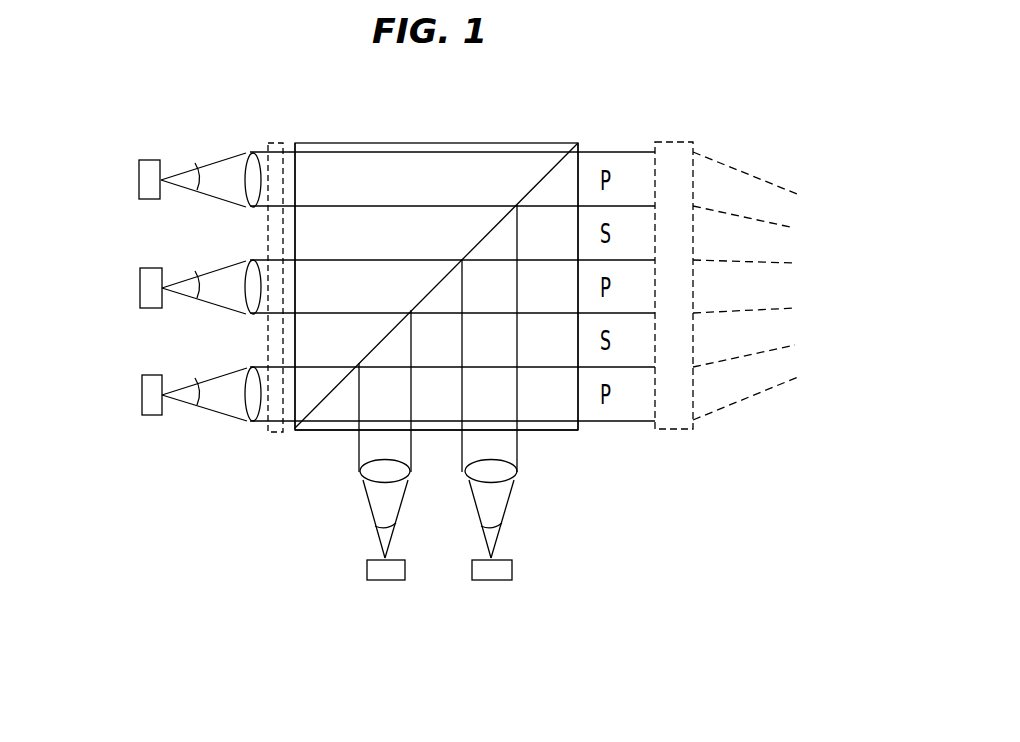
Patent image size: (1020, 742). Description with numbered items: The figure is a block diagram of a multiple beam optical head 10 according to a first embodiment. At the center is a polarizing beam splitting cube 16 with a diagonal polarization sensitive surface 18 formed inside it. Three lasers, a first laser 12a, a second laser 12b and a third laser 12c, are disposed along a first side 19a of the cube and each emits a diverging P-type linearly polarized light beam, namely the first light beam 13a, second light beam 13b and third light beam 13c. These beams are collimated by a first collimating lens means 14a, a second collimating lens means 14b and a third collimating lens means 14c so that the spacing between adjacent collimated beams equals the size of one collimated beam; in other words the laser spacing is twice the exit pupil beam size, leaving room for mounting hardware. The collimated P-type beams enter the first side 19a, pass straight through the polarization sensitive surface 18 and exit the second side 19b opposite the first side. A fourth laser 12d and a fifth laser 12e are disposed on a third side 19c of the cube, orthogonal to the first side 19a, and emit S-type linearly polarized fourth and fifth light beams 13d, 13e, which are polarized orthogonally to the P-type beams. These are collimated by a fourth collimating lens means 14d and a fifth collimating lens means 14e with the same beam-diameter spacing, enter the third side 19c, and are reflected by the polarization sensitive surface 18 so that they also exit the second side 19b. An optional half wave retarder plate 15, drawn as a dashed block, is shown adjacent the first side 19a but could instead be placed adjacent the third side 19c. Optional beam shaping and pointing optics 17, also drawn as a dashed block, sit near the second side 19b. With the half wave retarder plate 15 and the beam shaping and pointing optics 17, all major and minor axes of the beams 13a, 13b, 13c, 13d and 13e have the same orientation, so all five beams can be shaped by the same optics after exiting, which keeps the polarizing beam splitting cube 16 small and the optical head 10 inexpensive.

The multiple beam optical head 10 is at (382, 107).
The first laser 12a is at (139, 178).
The second laser 12b is at (140, 286).
The third laser 12c is at (142, 394).
The fourth laser 12d is at (385, 580).
The fifth laser 12e is at (491, 580).
The first light beam 13a is at (203, 161).
The second light beam 13b is at (203, 269).
The third light beam 13c is at (203, 376).
The fourth light beam 13d is at (373, 520).
The fifth light beam 13e is at (479, 520).
The first collimating lens means 14a is at (245, 167).
The second collimating lens means 14b is at (245, 275).
The third collimating lens means 14c is at (246, 382).
The fourth collimating lens means 14d is at (366, 485).
The fifth collimating lens means 14e is at (472, 485).
The half wave retarder plate 15 is at (270, 435).
The polarizing beam splitting cube 16 is at (471, 143).
The beam shaping and pointing optics 17 is at (680, 142).
The polarization sensitive surface 18 is at (555, 167).
The first side 19a is at (293, 142).
The second side 19b is at (580, 162).
The third side 19c is at (562, 432).